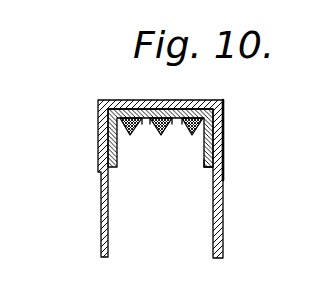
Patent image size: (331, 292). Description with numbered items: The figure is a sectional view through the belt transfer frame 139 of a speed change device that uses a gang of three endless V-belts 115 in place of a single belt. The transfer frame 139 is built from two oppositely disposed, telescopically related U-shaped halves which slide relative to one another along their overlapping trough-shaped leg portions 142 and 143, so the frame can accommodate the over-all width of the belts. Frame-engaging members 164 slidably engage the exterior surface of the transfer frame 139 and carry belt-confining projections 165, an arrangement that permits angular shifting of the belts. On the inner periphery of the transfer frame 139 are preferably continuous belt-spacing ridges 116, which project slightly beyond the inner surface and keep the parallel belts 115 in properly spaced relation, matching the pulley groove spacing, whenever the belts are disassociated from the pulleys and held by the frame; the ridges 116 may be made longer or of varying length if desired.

The belt transfer frame 139 is at (162, 111).
The frame-engaging member 164 is at (224, 118).
The endless V-belt 115 is at (112, 144).
The trough-shaped leg portion 142 is at (206, 140).
The trough-shaped leg portion 143 is at (210, 170).
The belt-spacing ridge 116 is at (144, 121).
The belt-confining projection 165 is at (102, 238).